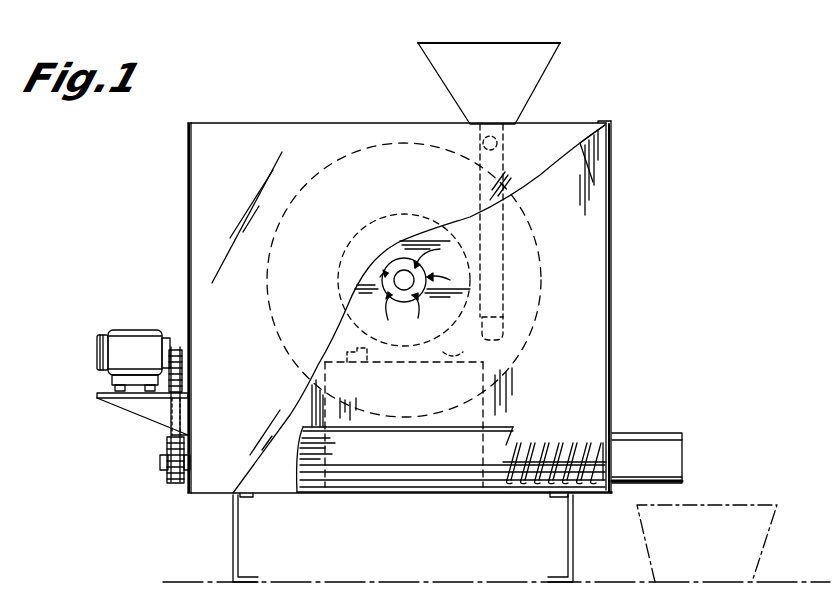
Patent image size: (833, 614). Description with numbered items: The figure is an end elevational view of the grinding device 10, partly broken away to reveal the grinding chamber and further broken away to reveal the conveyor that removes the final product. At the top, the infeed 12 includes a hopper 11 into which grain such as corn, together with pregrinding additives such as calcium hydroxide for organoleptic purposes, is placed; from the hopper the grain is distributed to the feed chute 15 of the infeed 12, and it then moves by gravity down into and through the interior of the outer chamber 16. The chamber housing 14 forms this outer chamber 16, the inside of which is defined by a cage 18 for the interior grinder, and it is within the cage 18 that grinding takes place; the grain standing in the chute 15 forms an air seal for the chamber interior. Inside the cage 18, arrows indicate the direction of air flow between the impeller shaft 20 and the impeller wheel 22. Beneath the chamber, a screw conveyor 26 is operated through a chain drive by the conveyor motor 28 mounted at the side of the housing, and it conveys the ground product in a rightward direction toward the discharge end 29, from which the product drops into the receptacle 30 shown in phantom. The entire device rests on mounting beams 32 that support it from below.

The grinding device 10 is at (126, 205).
The hopper 11 is at (508, 43).
The infeed 12 is at (450, 43).
The chamber housing 14 is at (188, 288).
The feed chute 15 is at (497, 202).
The outer chamber 16 is at (593, 182).
The cage 18 is at (542, 267).
The impeller shaft 20 is at (405, 262).
The impeller wheel 22 is at (482, 312).
The screw conveyor 26 is at (593, 468).
The conveyor motor 28 is at (105, 373).
The discharge end 29 is at (641, 433).
The receptacle 30 is at (715, 503).
The mounting beams 32 is at (238, 551).